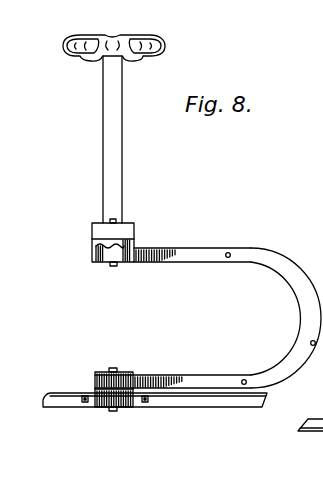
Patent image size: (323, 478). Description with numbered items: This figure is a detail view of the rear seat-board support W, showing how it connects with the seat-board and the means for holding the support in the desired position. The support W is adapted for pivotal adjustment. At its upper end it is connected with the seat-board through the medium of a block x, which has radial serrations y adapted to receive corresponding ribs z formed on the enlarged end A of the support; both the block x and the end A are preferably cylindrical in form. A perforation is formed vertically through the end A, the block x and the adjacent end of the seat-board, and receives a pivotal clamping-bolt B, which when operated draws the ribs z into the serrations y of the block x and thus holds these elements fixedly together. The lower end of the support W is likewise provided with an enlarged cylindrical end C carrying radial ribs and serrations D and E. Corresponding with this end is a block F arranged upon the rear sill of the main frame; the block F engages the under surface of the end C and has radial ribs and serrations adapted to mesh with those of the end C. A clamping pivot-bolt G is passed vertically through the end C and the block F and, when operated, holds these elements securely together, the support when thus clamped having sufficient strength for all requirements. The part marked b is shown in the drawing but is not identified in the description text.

The pivotal clamping-bolt B is at (113, 220).
The block x is at (134, 240).
The radial serrations y is at (95, 249).
The ribs z is at (98, 252).
The enlarged end A is at (128, 263).
The rear seat-board support W is at (319, 306).
The clamping pivot-bolt G is at (115, 371).
The enlarged cylindrical end C is at (128, 385).
The radial ribs and serrations D is at (112, 393).
The radial ribs and serrations E is at (125, 397).
The block F is at (106, 412).
The base plate b is at (199, 400).